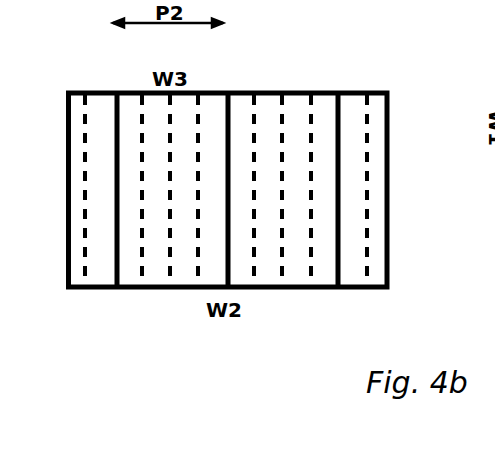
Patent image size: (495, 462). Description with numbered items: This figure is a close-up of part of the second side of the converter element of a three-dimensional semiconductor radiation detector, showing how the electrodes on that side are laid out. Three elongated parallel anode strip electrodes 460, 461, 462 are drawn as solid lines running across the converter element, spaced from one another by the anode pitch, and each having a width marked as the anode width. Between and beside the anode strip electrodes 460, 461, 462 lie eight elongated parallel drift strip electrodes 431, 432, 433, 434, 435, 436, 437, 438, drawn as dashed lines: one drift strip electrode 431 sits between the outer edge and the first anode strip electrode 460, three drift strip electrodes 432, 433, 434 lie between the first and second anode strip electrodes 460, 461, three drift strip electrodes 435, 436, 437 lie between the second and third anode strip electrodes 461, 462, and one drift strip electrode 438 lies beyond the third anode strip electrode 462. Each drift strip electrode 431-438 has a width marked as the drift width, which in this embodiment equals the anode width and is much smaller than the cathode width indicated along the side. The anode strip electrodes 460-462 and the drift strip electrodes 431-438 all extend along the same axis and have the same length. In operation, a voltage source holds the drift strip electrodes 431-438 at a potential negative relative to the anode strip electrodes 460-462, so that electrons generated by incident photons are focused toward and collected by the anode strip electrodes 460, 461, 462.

The drift strip electrode 431 is at (85, 287).
The drift strip electrode 432 is at (142, 287).
The drift strip electrode 433 is at (170, 287).
The drift strip electrode 434 is at (198, 287).
The drift strip electrode 435 is at (254, 287).
The drift strip electrode 436 is at (282, 287).
The drift strip electrode 437 is at (311, 287).
The drift strip electrode 438 is at (367, 287).
The anode strip electrode 460 is at (117, 93).
The anode strip electrode 461 is at (228, 93).
The anode strip electrode 462 is at (338, 93).